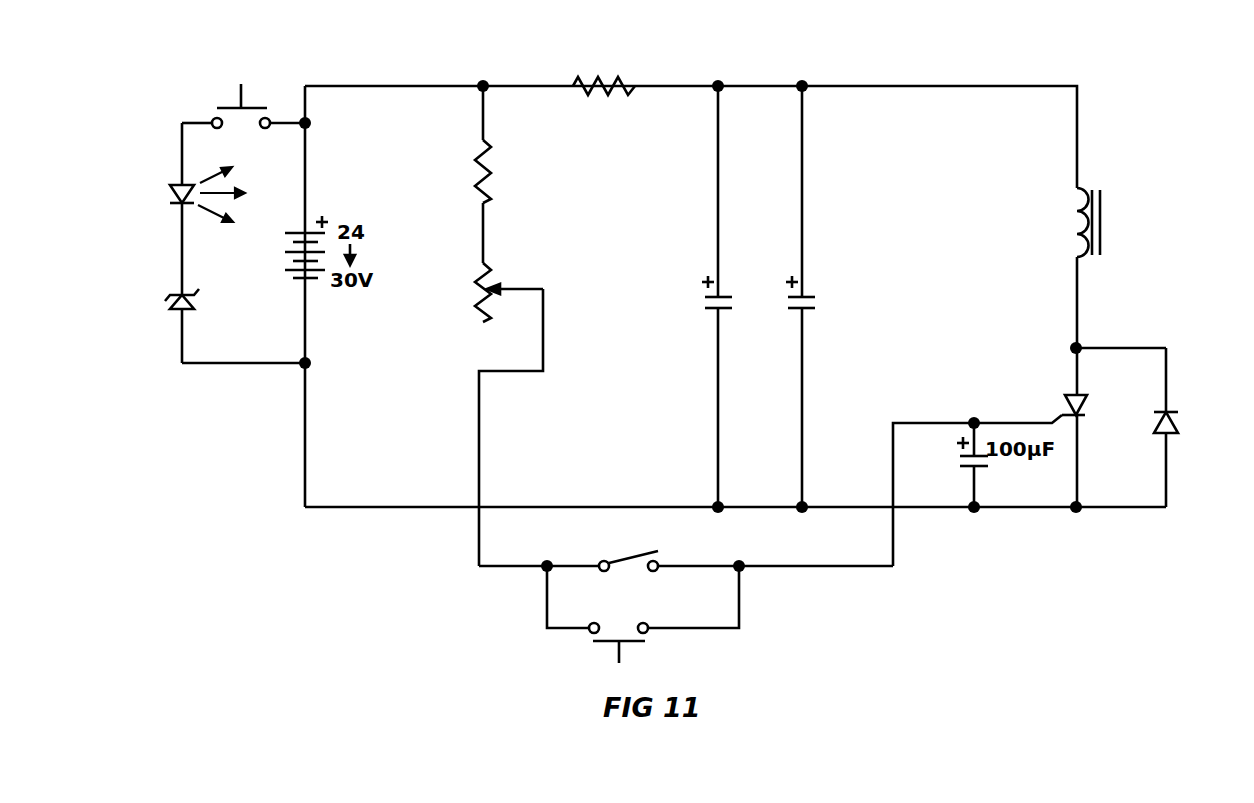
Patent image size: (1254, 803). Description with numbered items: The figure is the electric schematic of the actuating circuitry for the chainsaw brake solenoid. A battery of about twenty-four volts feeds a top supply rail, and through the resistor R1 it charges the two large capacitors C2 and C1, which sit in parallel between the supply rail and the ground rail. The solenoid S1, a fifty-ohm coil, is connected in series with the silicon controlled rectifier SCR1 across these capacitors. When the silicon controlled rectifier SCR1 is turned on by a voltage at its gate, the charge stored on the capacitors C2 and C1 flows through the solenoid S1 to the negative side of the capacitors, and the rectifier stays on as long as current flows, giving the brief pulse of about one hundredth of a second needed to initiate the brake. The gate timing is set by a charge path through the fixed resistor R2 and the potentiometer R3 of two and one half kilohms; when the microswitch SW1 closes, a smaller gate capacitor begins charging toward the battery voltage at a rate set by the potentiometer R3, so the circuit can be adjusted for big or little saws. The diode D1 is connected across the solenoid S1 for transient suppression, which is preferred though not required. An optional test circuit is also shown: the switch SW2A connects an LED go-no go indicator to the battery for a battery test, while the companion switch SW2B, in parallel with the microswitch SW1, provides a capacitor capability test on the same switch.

The battery test switch SW2A is at (243, 91).
The resistor R1 is at (604, 91).
The resistor R2 is at (498, 174).
The potentiometer R3 is at (505, 414).
The capacitor C2 is at (687, 296).
The capacitor C1 is at (838, 296).
The solenoid S1 is at (1107, 222).
The silicon controlled rectifier SCR1 is at (990, 473).
The diode D1 is at (1149, 427).
The microswitch SW1 is at (686, 582).
The capacitor test switch SW2B is at (643, 631).